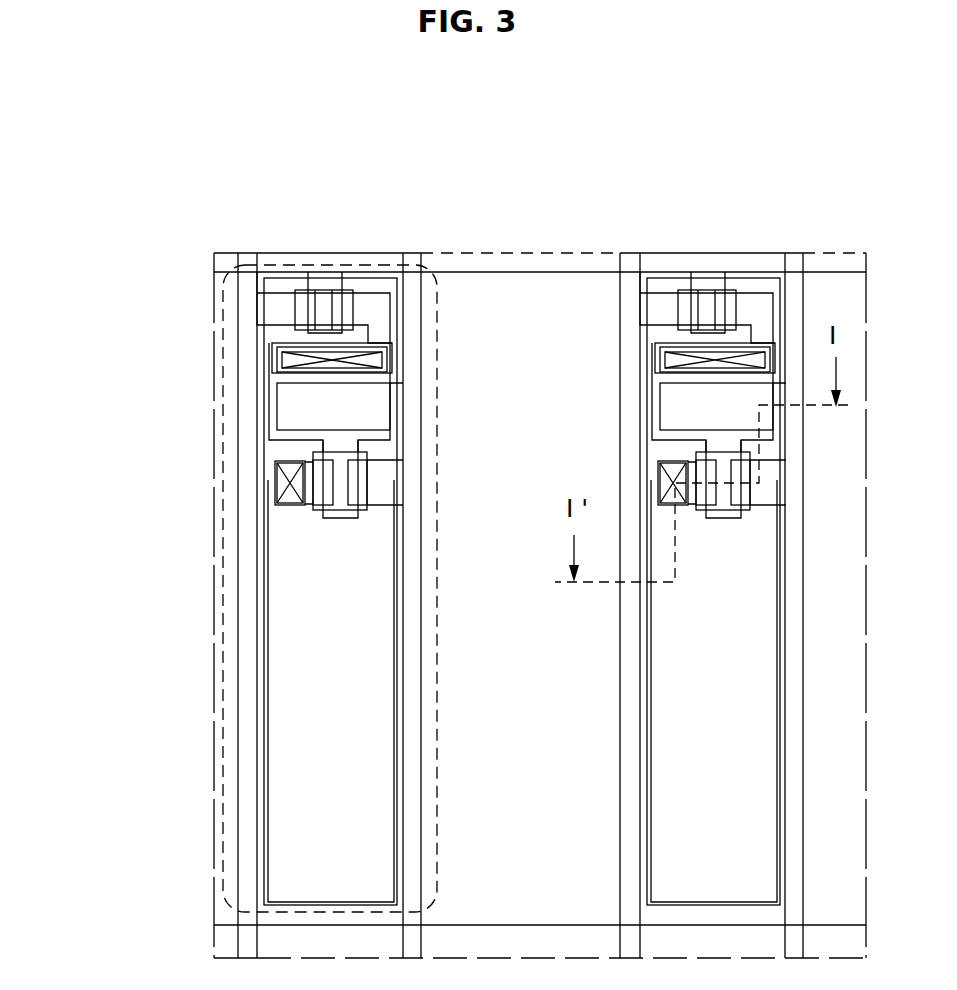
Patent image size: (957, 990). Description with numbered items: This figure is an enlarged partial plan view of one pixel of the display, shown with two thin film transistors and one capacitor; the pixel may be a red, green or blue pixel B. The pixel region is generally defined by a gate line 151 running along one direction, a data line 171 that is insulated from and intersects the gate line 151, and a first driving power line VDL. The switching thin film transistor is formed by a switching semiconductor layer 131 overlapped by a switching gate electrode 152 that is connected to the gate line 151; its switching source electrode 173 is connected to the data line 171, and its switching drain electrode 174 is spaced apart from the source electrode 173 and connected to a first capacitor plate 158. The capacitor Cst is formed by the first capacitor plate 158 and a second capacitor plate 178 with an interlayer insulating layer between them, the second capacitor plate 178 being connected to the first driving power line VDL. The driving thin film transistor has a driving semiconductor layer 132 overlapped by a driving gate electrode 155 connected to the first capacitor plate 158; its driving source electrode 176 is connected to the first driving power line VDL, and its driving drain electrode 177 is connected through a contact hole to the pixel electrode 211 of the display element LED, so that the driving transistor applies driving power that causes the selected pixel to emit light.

The gate line 151 is at (228, 261).
The data line 171 is at (247, 357).
The switching source electrode 173 is at (282, 293).
The switching gate electrode 152 is at (327, 297).
The switching semiconductor layer 131 is at (333, 283).
The switching drain electrode 174 is at (370, 293).
The second capacitor plate 178 is at (300, 426).
The first capacitor plate 158 is at (269, 438).
The driving drain electrode 177 is at (292, 505).
The driving semiconductor layer 132 is at (320, 512).
The driving gate electrode 155 is at (343, 518).
The driving source electrode 176 is at (380, 505).
The pixel electrode 211 is at (265, 727).
The first driving power line VDL is at (410, 295).
The blue pixel B is at (440, 703).
The display element LED is at (280, 789).
The capacitor Cst is at (118, 392).